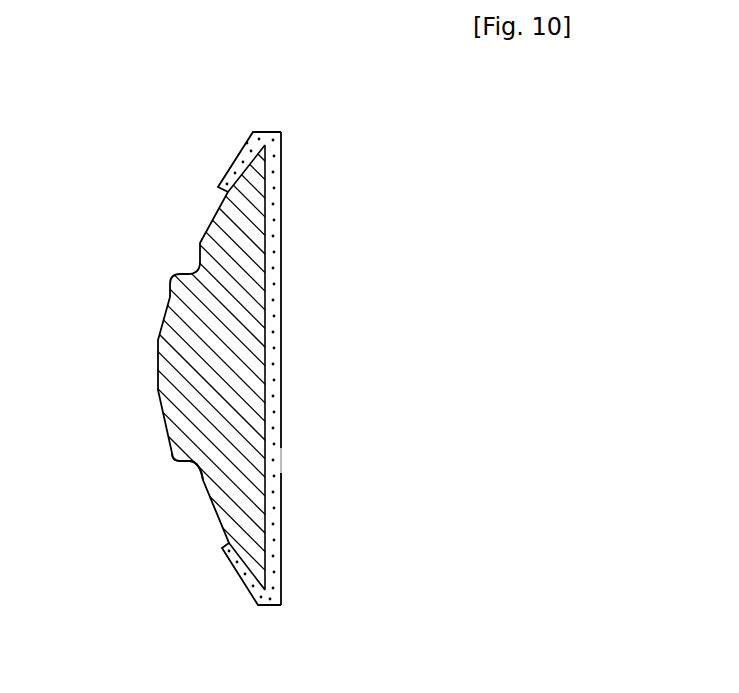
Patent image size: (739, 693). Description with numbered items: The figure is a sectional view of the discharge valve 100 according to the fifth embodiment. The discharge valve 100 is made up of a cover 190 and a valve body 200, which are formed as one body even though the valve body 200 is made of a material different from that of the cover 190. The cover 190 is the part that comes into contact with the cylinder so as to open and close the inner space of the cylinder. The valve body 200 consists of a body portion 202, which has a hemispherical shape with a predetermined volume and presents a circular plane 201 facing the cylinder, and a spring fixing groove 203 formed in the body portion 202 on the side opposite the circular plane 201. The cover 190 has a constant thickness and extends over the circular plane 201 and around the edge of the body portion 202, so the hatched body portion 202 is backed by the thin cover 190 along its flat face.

The discharge valve 100 is at (280, 102).
The cover 190 is at (297, 323).
The valve body 200 is at (168, 355).
The circular plane 201 is at (283, 502).
The body portion 202 is at (203, 342).
The spring fixing groove 203 is at (178, 463).